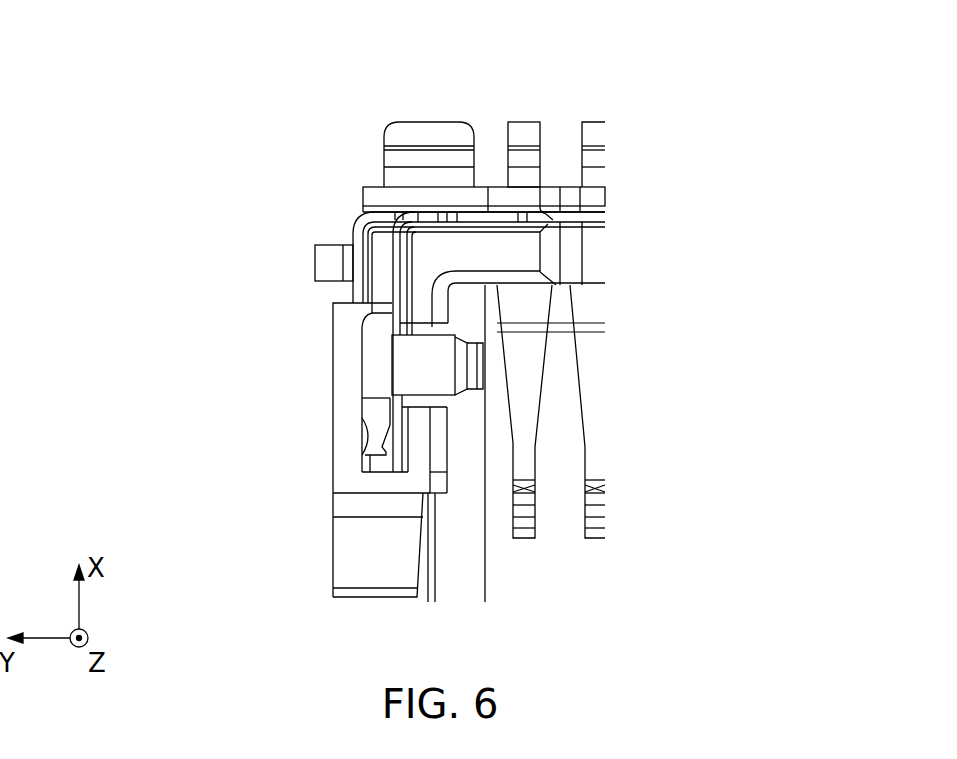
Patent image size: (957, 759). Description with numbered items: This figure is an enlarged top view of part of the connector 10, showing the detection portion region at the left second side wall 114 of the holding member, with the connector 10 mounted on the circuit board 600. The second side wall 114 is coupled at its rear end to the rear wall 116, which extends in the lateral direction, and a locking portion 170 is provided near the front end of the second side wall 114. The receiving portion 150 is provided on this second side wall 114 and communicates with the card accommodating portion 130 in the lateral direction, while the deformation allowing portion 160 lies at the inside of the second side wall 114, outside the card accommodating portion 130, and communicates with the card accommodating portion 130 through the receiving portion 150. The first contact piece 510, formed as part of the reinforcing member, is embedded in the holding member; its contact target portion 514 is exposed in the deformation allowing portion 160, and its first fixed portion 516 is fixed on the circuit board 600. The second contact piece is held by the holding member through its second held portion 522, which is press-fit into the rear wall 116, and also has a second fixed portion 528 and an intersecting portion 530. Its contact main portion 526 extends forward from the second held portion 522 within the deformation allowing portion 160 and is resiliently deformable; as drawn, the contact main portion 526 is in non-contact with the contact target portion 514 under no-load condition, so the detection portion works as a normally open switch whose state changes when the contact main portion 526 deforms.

The connector 10 is at (278, 82).
The first contact piece 510 is at (429, 103).
The first fixed portion 516 is at (430, 132).
The second held portion 522 is at (555, 215).
The circuit board 600 is at (318, 201).
The second fixed portion 528 is at (315, 266).
The rear wall 116 is at (575, 255).
The contact main portion 526 is at (393, 322).
The deformation allowing portion 160 is at (362, 376).
The second side wall 114 is at (342, 418).
The contact target portion 514 is at (365, 455).
The intersecting portion 530 is at (477, 365).
The receiving portion 150 is at (448, 404).
The locking portion 170 is at (372, 570).
The card accommodating portion 130 is at (592, 557).